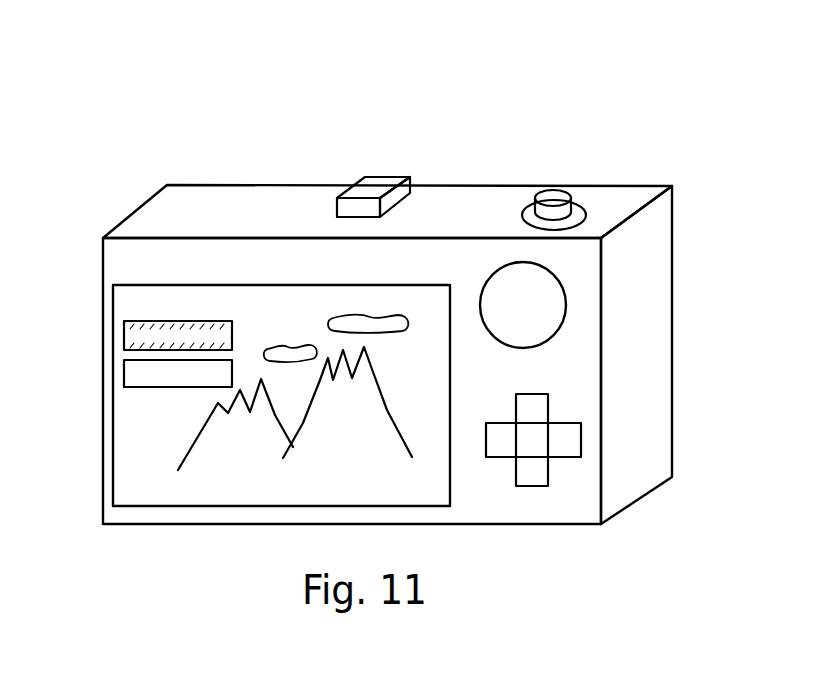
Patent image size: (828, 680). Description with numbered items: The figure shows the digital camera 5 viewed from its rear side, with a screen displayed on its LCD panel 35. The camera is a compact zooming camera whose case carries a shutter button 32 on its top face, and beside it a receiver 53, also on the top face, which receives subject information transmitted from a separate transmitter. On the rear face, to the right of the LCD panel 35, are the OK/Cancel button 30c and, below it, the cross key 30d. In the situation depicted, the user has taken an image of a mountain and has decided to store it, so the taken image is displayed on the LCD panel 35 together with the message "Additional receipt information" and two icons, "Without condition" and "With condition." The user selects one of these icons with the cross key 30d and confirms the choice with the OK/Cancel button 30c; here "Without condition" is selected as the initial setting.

The digital camera 5 is at (488, 78).
The LCD panel 35 is at (168, 413).
The receiver 53 is at (385, 183).
The shutter button 32 is at (552, 197).
The OK/Cancel button 30c is at (532, 302).
The cross key 30d is at (537, 437).